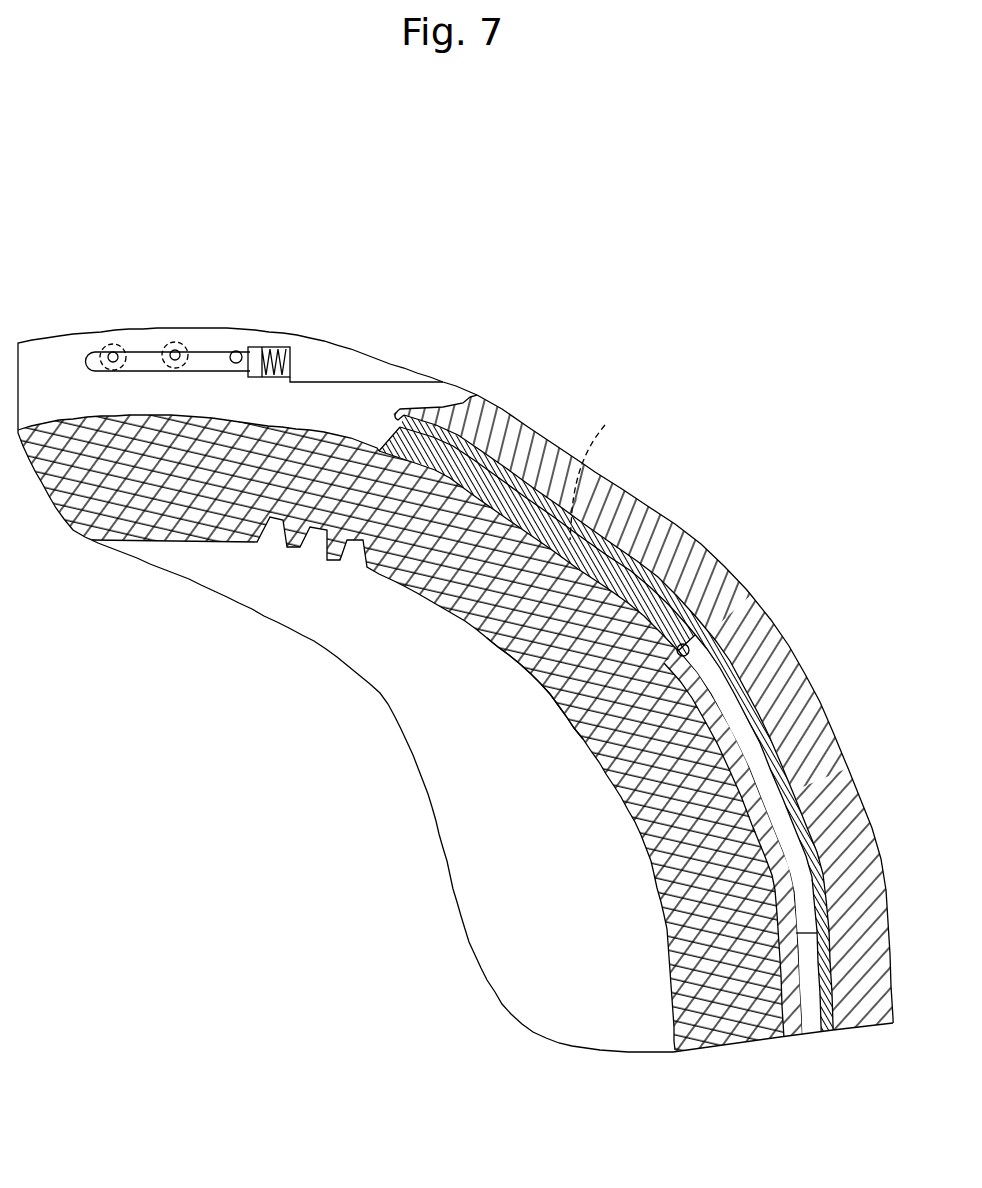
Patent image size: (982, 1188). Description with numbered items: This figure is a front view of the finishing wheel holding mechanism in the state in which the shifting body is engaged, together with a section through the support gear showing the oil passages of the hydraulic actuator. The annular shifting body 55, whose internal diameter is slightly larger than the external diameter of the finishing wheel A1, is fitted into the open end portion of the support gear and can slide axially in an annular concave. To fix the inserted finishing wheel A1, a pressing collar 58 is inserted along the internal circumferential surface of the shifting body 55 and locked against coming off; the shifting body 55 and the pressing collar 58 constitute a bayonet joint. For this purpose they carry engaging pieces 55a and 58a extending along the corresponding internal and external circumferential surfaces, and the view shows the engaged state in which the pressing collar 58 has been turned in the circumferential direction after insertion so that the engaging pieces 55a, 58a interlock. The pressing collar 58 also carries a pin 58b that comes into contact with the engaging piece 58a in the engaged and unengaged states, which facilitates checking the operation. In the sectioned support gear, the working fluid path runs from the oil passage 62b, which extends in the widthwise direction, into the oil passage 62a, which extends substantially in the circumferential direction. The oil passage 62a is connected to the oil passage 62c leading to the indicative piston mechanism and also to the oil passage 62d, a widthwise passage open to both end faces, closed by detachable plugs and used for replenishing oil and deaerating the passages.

The shifting body 55 is at (625, 497).
The engaging piece 55a is at (657, 553).
The pressing collar 58 is at (497, 398).
The engaging piece 58a is at (605, 425).
The pin 58b is at (703, 633).
The oil passage 62a is at (147, 347).
The oil passage 62b is at (173, 347).
The oil passage 62c is at (115, 343).
The oil passage 62d is at (240, 350).
The finishing wheel A1 is at (540, 690).